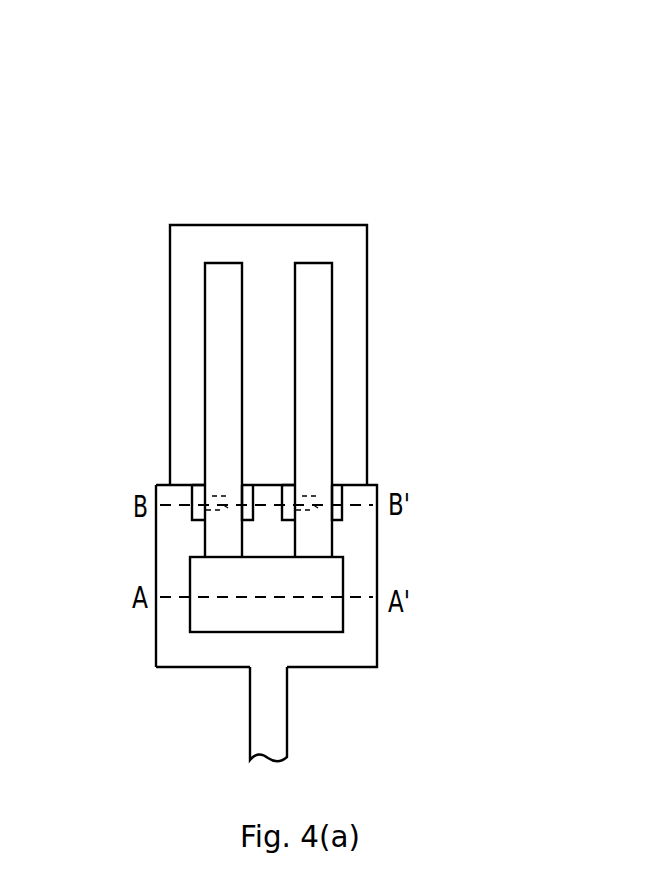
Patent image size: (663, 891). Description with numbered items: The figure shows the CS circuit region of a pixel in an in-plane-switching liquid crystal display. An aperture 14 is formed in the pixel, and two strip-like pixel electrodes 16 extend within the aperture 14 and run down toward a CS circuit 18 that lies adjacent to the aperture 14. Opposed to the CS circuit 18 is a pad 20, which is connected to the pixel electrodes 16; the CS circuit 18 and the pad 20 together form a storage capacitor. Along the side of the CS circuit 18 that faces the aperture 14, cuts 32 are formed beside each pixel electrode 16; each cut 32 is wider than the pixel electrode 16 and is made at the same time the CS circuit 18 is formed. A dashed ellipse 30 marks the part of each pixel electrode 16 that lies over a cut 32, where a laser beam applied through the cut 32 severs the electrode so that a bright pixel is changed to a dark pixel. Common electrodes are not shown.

The aperture 14 is at (352, 213).
The pixel electrode 16 is at (223, 293).
The CS circuit 18 is at (362, 577).
The pad 20 is at (307, 620).
The ellipse 30 is at (230, 487).
The cut 32 is at (195, 475).